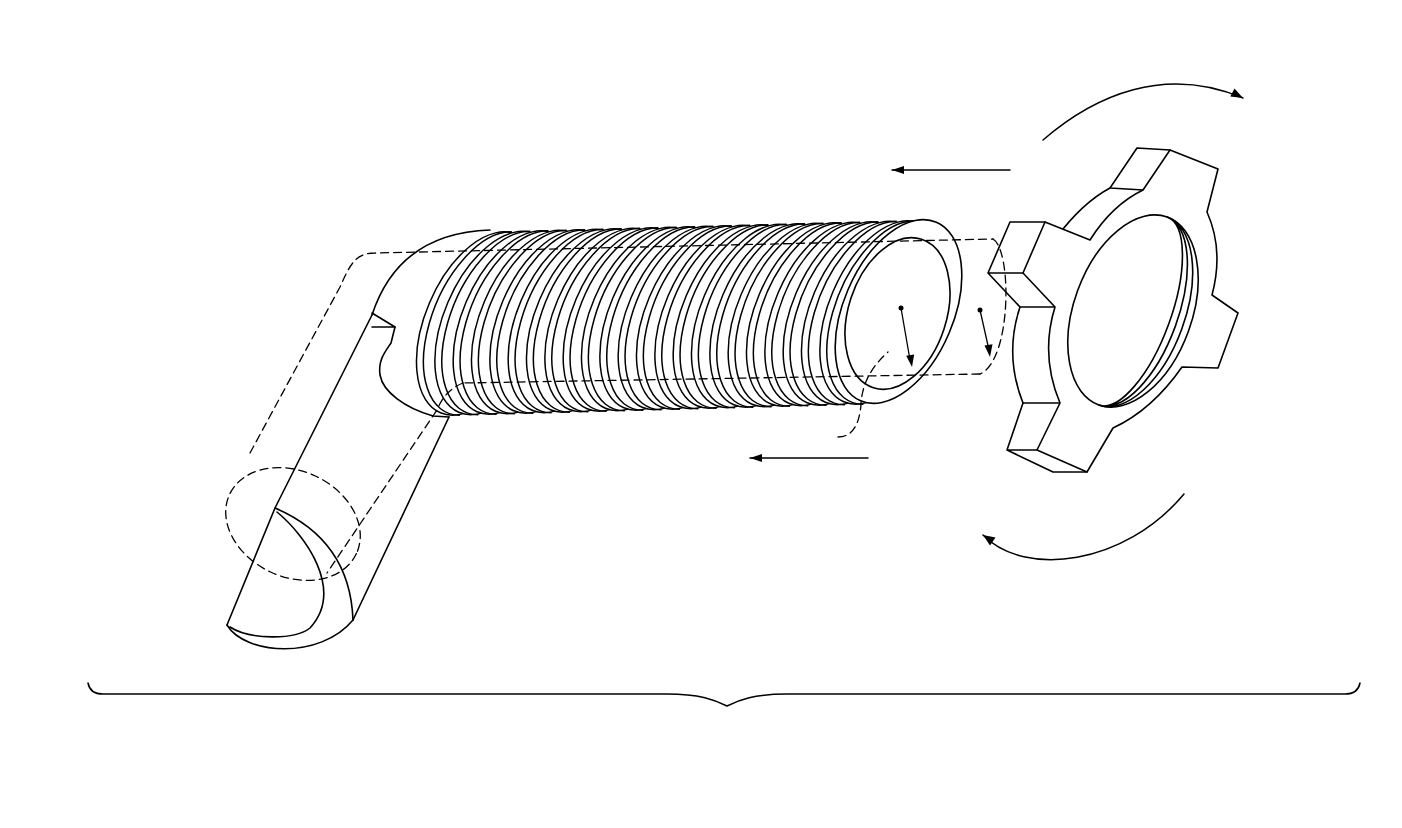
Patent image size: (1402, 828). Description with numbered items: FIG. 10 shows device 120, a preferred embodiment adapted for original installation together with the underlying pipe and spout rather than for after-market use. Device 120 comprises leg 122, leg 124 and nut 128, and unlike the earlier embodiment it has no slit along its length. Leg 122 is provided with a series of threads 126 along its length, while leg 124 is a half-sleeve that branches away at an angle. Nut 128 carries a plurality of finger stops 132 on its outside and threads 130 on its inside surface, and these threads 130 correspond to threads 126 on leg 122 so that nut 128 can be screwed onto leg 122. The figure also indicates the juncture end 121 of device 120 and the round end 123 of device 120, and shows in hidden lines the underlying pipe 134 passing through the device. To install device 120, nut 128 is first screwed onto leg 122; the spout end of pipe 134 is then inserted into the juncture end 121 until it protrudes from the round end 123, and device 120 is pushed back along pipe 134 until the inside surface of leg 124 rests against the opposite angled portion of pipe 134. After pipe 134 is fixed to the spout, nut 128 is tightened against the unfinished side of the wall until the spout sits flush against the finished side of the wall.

The device 120 is at (196, 172).
The juncture end 121 is at (477, 233).
The leg 122 is at (828, 220).
The round end 123 is at (838, 437).
The leg 124 is at (410, 502).
The threads 126 is at (650, 232).
The nut 128 is at (1165, 325).
The threads 130 is at (1150, 374).
The finger stops 132 is at (1200, 161).
The pipe 134 is at (250, 453).